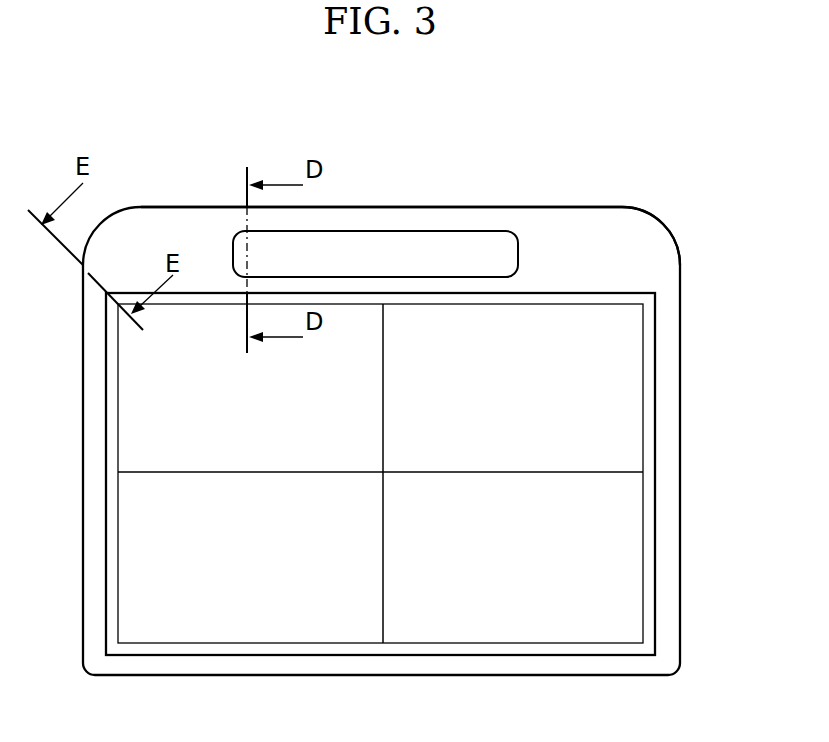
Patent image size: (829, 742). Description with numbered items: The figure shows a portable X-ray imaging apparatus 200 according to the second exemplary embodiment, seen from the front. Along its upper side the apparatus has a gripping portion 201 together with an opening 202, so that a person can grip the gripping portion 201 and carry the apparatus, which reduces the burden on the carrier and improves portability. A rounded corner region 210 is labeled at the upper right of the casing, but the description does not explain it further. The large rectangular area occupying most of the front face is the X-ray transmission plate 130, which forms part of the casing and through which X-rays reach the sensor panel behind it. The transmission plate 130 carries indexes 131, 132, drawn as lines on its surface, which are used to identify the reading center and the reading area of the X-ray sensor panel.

The X-ray imaging apparatus 200 is at (178, 207).
The gripping portion 201 is at (530, 218).
The opening 202 is at (395, 238).
The rounded corner portion 210 is at (640, 235).
The X-ray transmission plate 130 is at (628, 377).
The index 131 is at (628, 473).
The index 132 is at (452, 643).